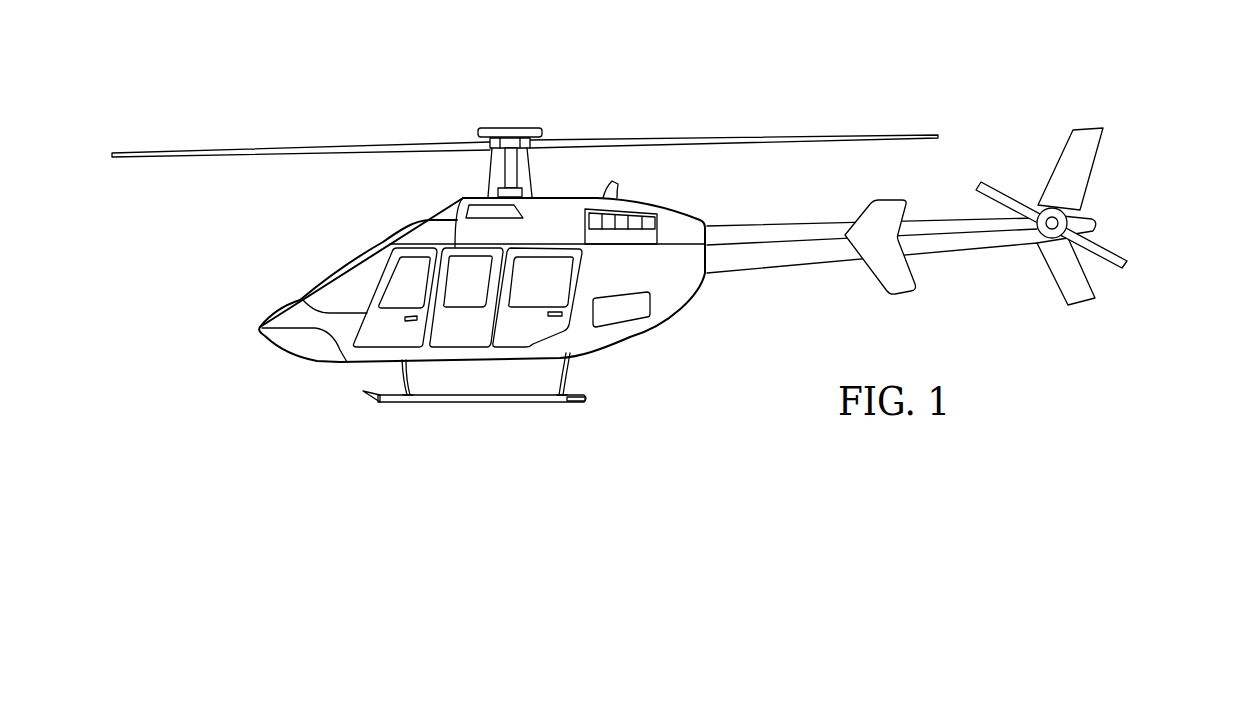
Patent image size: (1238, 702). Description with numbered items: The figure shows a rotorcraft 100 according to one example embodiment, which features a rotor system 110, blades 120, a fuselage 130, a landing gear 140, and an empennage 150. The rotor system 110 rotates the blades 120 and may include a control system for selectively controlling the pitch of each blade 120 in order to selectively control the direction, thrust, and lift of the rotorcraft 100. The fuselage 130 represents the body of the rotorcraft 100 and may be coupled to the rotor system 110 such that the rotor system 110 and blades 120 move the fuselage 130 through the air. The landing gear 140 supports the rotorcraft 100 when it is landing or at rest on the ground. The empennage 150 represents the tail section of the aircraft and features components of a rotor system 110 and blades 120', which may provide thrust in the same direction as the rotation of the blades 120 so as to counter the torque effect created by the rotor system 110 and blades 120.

The rotorcraft 100 is at (356, 80).
The rotor system 110 is at (510, 127).
The blades 120 is at (525, 117).
The blades 120' is at (1093, 216).
The fuselage 130 is at (303, 358).
The landing gear 140 is at (450, 405).
The empennage 150 is at (783, 265).